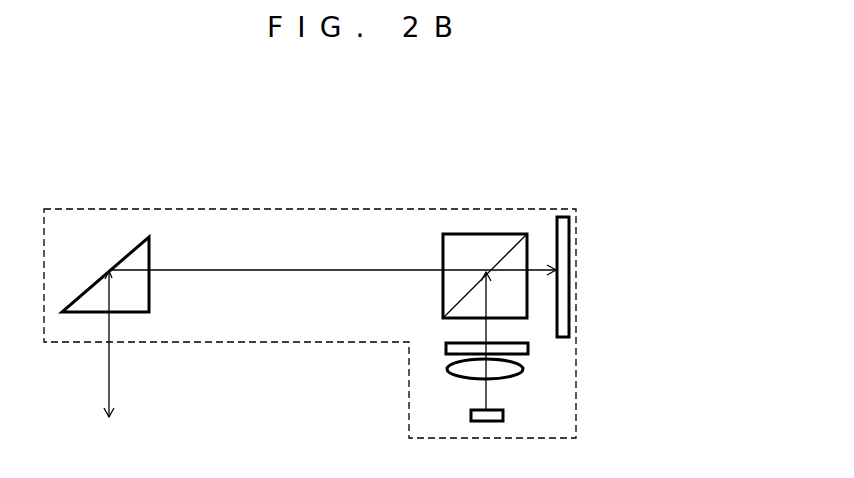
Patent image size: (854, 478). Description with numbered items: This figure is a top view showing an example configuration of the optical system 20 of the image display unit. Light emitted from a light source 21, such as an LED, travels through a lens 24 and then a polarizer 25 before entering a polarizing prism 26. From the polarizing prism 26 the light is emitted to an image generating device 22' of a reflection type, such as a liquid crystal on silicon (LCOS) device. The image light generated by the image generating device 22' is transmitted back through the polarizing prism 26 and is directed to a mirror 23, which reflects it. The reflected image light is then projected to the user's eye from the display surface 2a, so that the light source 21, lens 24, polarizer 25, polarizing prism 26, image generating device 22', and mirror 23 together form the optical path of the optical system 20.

The optical system 20 is at (305, 120).
The mirror 23 is at (148, 238).
The polarizing prism 26 is at (480, 252).
The image generating device 22' is at (628, 277).
The polarizer 25 is at (530, 347).
The lens 24 is at (512, 369).
The light source 21 is at (508, 416).
The display surface 2a is at (327, 359).